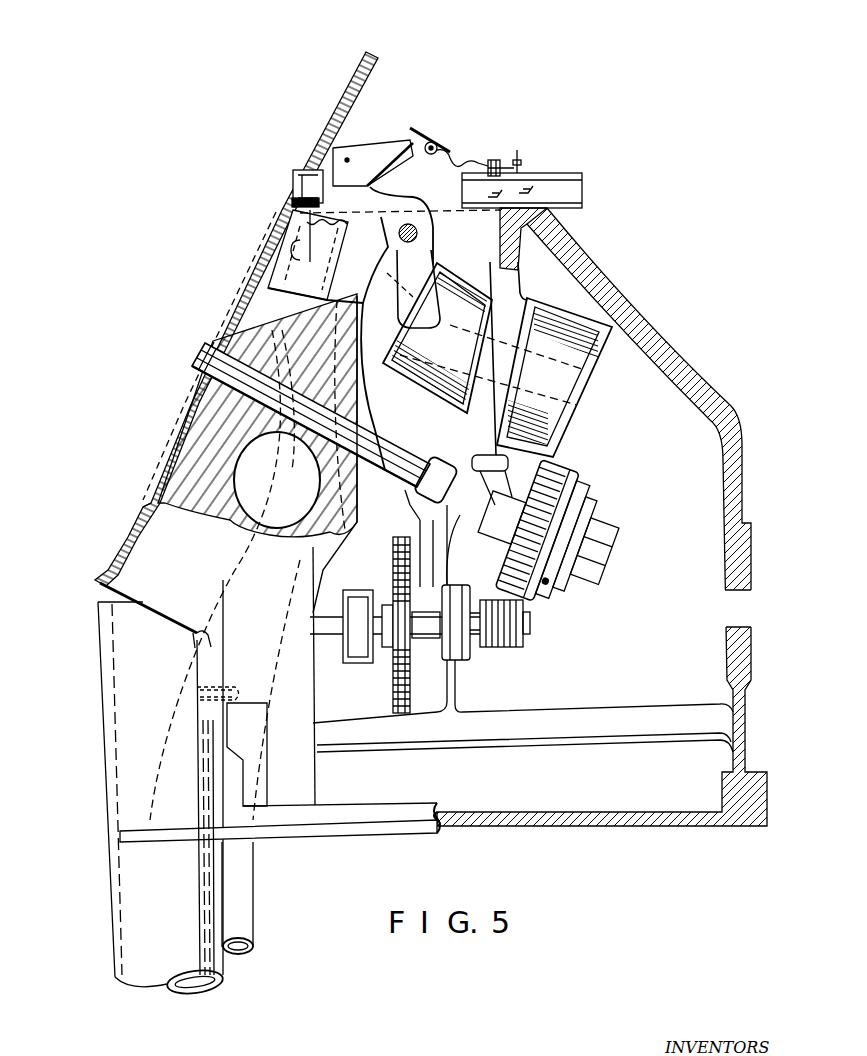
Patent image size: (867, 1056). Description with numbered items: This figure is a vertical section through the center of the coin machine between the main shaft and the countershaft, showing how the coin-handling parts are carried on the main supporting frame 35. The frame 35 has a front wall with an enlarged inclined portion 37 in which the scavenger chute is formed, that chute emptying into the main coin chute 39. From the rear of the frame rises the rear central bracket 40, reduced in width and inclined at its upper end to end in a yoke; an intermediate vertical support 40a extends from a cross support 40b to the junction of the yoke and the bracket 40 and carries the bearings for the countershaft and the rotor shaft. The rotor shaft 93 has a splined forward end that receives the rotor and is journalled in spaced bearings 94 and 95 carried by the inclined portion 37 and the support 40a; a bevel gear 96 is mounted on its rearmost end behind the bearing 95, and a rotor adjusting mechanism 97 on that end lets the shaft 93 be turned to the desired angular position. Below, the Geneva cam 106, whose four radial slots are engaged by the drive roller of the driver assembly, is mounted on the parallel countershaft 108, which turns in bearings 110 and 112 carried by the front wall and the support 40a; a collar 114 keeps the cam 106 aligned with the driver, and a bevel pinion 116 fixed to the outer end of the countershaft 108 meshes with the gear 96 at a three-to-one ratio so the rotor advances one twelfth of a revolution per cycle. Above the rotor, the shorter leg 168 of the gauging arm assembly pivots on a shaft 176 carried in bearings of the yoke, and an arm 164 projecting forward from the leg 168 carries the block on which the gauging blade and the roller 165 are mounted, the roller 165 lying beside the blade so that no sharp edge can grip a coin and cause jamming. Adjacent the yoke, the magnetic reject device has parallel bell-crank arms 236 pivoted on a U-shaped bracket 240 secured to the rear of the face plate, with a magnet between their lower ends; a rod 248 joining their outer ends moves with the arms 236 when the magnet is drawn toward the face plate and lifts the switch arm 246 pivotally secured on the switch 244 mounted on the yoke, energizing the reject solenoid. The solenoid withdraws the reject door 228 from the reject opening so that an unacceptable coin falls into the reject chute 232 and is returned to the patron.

The main supporting frame 35 is at (217, 667).
The enlarged inclined portion 37 is at (147, 593).
The main coin chute 39 is at (120, 947).
The rear central bracket 40 is at (657, 340).
The intermediate vertical support 40a is at (533, 295).
The cross support 40b is at (547, 715).
The shaft 93 is at (400, 460).
The bearing 94 is at (212, 393).
The bearing 95 is at (497, 497).
The bevel gear 96 is at (578, 463).
The rotor adjusting mechanism 97 is at (600, 553).
The Geneva cam 106 is at (400, 560).
The countershaft 108 is at (345, 650).
The bearing 110 is at (197, 638).
The bearing 112 is at (467, 647).
The collar 114 is at (393, 643).
The bevel pinion 116 is at (513, 645).
The arm 164 is at (343, 147).
The roller 165 is at (297, 180).
The leg 168 is at (413, 243).
The shaft 176 is at (410, 226).
The reject door 228 is at (293, 210).
The reject chute 232 is at (253, 938).
The parallel arms 236 is at (430, 137).
The U-shaped bracket 240 is at (367, 155).
The switch 244 is at (547, 180).
The switch arm 246 is at (450, 154).
The rod 248 is at (440, 143).